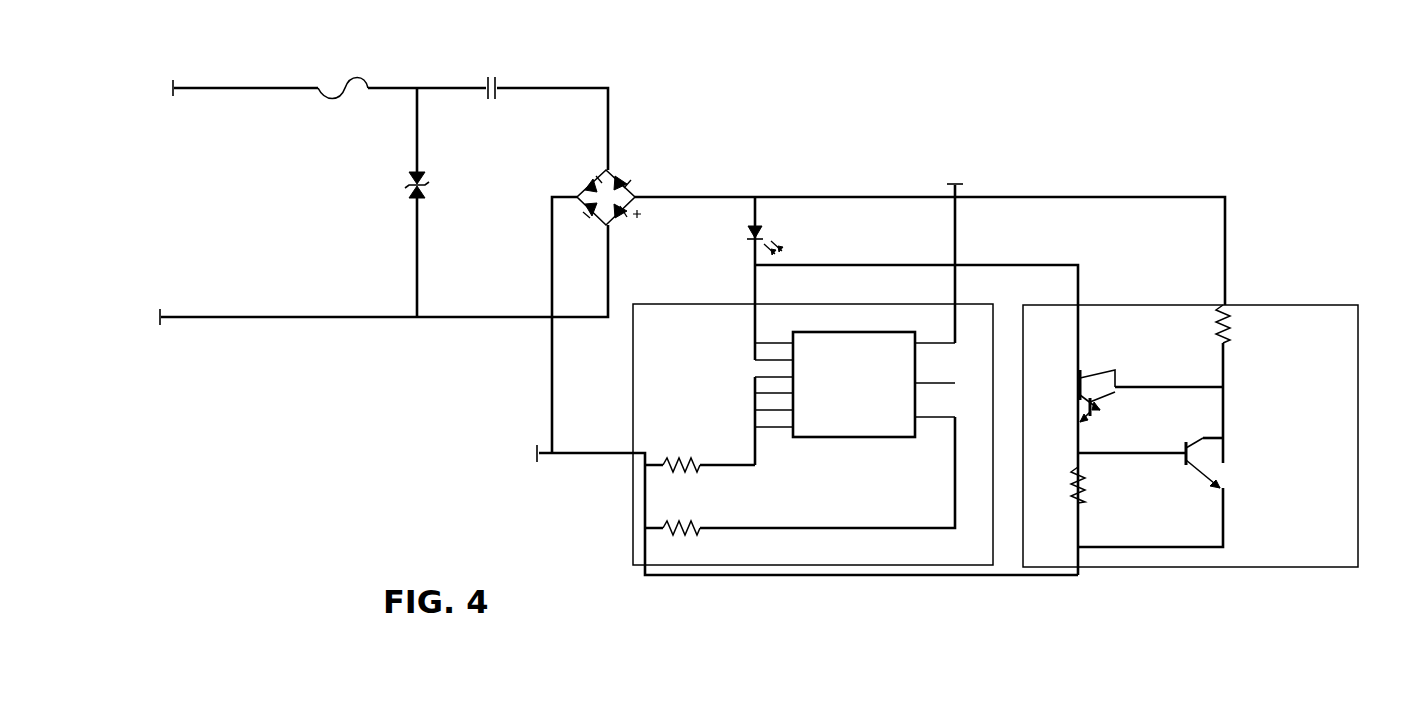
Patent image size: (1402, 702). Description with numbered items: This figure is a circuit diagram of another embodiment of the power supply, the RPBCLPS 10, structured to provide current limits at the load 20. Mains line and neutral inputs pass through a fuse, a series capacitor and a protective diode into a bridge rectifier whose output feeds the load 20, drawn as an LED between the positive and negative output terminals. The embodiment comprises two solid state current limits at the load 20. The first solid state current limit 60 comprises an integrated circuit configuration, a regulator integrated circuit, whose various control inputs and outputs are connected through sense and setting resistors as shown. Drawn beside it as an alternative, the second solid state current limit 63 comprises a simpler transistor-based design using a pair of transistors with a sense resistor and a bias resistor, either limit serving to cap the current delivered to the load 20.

The RPBCLPS 10 is at (1093, 99).
The load 20 is at (771, 215).
The first solid state current limit 60 is at (860, 282).
The second solid state current limit 63 is at (1130, 262).